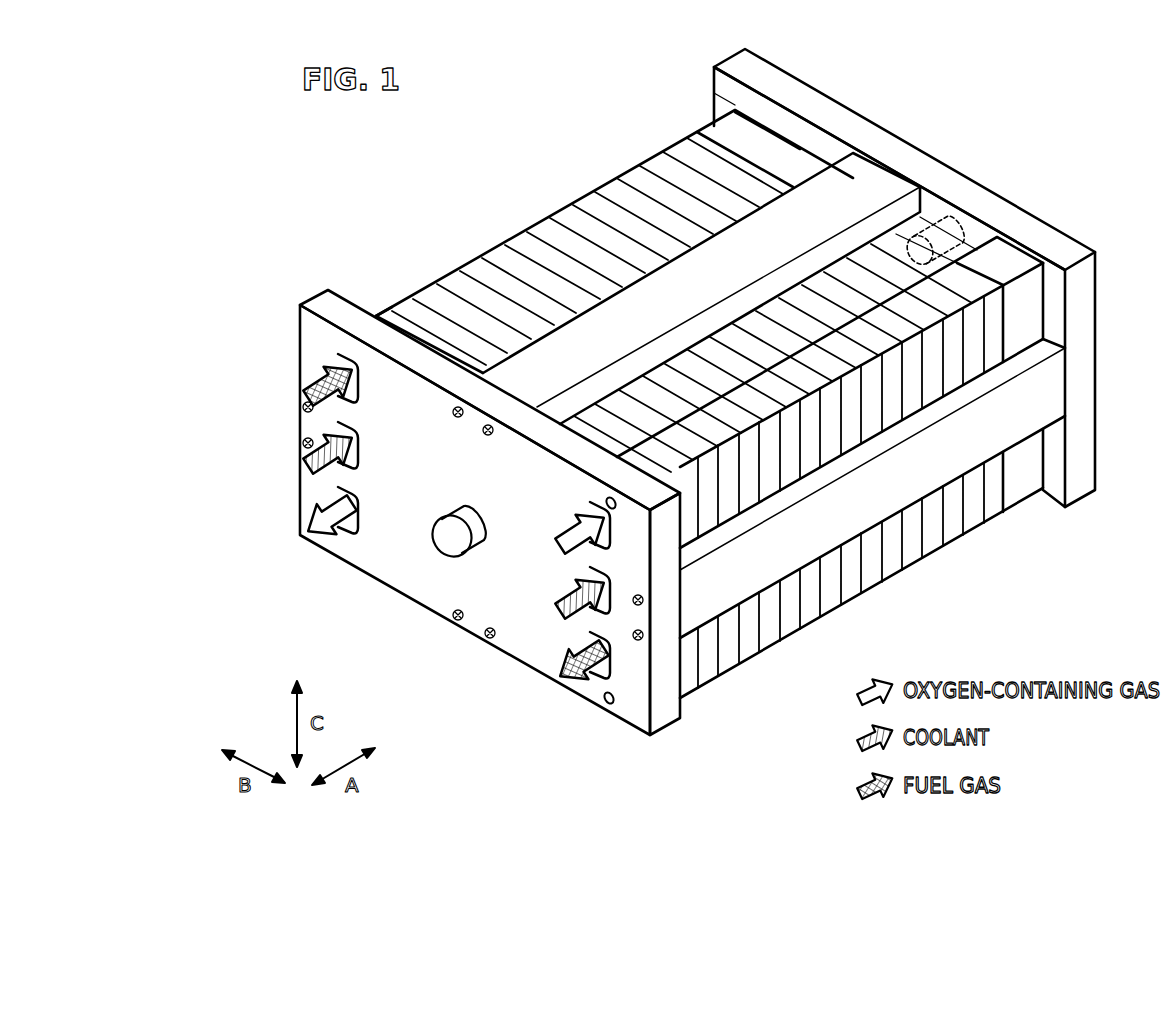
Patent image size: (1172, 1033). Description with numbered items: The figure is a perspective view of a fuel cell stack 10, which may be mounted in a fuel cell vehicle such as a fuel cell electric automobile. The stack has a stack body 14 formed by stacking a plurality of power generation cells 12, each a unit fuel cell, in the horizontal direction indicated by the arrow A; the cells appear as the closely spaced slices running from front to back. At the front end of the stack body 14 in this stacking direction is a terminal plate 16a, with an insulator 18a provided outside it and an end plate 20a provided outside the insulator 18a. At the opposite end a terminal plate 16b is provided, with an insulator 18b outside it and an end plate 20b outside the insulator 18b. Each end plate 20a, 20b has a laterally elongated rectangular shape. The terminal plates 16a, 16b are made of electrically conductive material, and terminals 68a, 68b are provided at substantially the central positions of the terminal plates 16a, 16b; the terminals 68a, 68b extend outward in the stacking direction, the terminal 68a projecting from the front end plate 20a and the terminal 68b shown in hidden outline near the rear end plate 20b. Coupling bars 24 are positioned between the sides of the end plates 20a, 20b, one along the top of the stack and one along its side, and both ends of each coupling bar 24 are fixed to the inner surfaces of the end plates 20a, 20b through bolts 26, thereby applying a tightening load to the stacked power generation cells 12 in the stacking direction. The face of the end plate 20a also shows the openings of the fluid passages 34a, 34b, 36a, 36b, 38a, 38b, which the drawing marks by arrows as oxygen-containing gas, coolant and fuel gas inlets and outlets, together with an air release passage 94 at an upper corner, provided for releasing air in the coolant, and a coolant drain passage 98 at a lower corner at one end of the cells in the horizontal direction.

The fuel cell stack 10 is at (389, 161).
The power generation cell 12 is at (538, 140).
The stack body 14 is at (709, 404).
The terminal plate 16a is at (430, 357).
The terminal plate 16b is at (770, 160).
The insulator 18a is at (389, 318).
The insulator 18b is at (755, 132).
The end plate 20a is at (294, 330).
The end plate 20b is at (1076, 234).
The coupling bar 24 is at (875, 178).
The bolt 26 is at (455, 415).
The oxygen-containing gas supply passage 34a is at (588, 520).
The oxygen-containing gas discharge passage 34b is at (345, 497).
The coolant supply passage 36a is at (597, 612).
The coolant discharge passage 36b is at (345, 432).
The fuel gas supply passage 38a is at (332, 350).
The fuel gas discharge passage 38b is at (593, 677).
The terminal 68a is at (435, 535).
The terminal 68b is at (955, 230).
The air release passage 94 is at (613, 509).
The coolant drain passage 98 is at (608, 704).